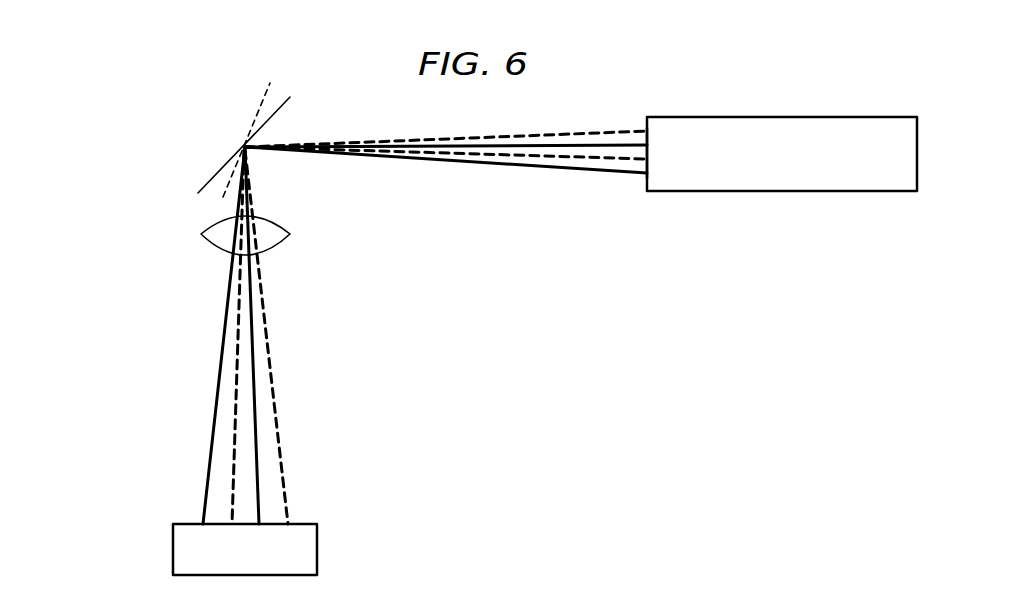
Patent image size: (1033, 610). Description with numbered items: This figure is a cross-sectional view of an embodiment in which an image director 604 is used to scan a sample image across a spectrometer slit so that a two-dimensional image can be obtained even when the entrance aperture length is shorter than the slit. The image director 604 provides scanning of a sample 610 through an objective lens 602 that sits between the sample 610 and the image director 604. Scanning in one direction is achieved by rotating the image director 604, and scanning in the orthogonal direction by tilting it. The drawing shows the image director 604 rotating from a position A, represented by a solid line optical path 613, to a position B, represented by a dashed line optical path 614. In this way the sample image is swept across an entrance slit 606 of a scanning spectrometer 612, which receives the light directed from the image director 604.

The objective lens 602 is at (277, 220).
The image director 604 is at (233, 75).
The entrance slit 606 is at (647, 153).
The sample 610 is at (317, 552).
The scanning spectrometer 612 is at (818, 117).
The optical path 613 is at (218, 383).
The optical path 614 is at (270, 365).